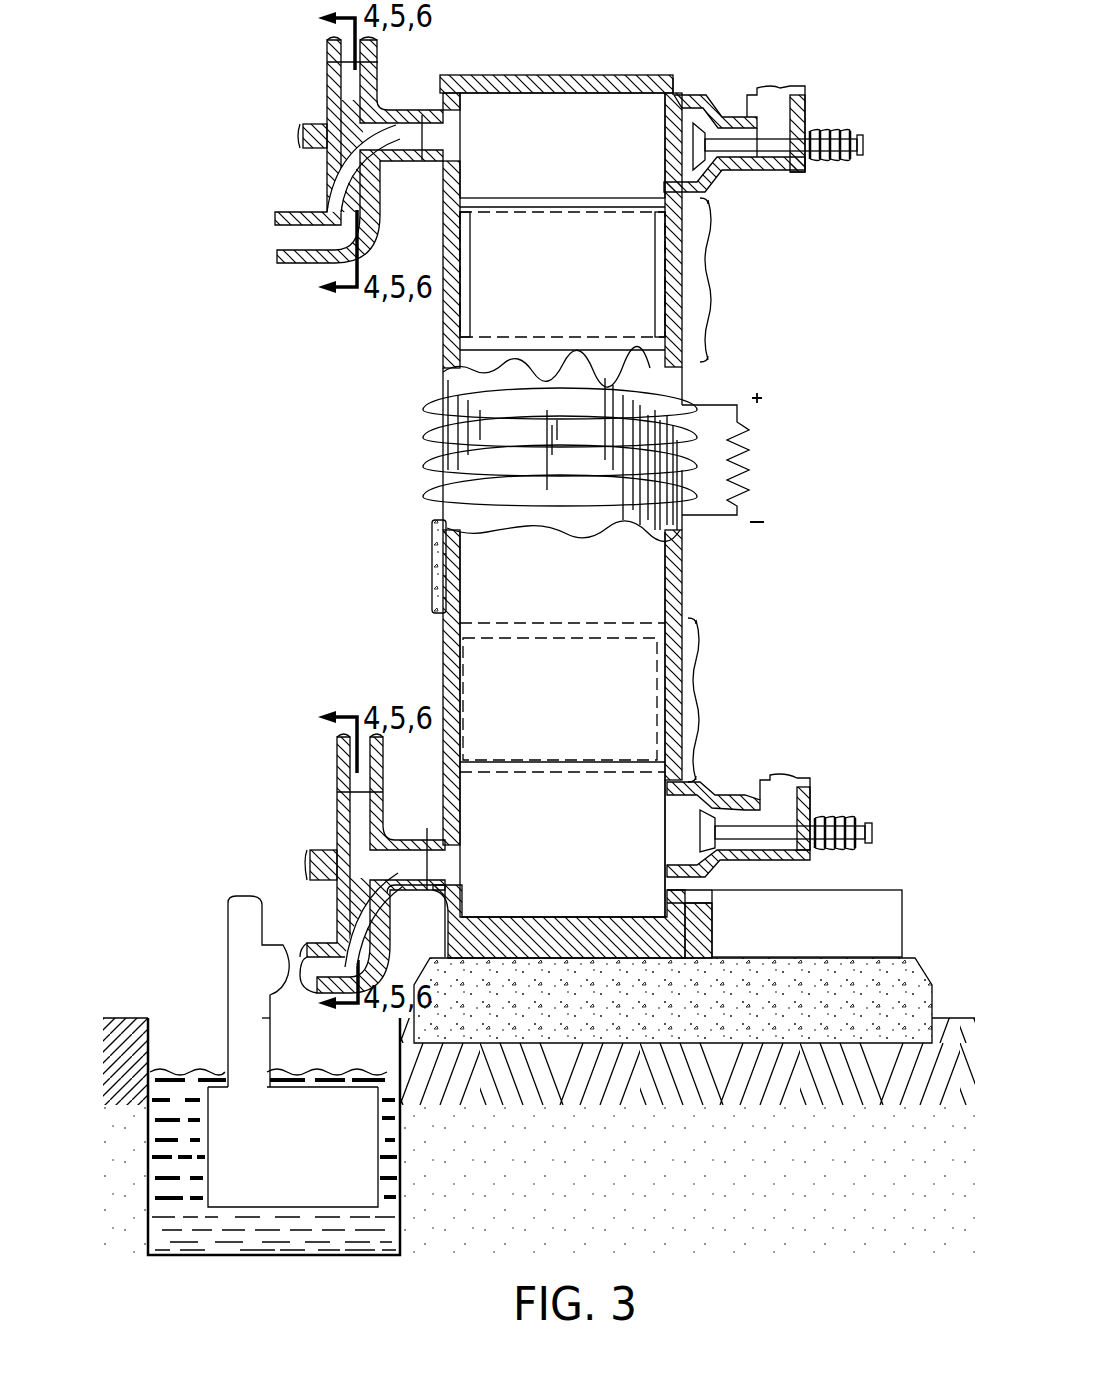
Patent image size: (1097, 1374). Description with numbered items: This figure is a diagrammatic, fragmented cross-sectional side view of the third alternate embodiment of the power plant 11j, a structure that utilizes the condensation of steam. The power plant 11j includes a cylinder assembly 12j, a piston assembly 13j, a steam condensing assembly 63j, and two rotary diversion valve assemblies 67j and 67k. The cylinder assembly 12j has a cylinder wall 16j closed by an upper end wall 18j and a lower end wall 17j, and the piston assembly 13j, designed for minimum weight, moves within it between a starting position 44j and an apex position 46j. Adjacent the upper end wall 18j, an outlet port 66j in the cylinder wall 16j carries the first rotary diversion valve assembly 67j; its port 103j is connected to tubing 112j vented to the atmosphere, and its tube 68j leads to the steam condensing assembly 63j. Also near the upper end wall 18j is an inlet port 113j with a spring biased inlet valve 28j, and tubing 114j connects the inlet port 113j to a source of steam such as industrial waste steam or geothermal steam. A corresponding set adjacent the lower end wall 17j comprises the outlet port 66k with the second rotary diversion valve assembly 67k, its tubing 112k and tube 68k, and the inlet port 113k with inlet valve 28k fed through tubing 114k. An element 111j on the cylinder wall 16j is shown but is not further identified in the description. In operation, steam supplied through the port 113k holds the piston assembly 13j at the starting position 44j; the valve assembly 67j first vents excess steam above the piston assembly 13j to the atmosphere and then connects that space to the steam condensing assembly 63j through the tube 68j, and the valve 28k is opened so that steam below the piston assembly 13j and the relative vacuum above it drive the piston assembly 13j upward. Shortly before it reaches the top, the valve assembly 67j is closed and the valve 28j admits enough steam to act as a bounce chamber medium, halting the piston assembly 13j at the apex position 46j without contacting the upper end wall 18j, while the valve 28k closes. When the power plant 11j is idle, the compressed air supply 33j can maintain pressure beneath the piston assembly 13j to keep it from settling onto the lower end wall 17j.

The power plant 11j is at (740, 565).
The cylinder assembly 12j is at (700, 660).
The piston assembly 13j is at (618, 284).
The cylinder wall 16j is at (446, 322).
The lower end wall 17j is at (468, 945).
The upper end wall 18j is at (606, 77).
The spring biased inlet valve 28j is at (741, 148).
The inlet valve 28k is at (800, 855).
The compressed air supply 33j is at (903, 912).
The starting position 44j is at (604, 700).
The apex position 46j is at (728, 280).
The steam condensing assembly 63j is at (407, 1204).
The outlet port 66j is at (452, 132).
The outlet port 66k is at (434, 840).
The rotary diversion valve assembly 67j is at (283, 126).
The rotary diversion valve assembly 67k is at (313, 846).
The tube 68j is at (298, 260).
The tube 68k is at (322, 943).
The port 103j is at (366, 78).
The bearing pad 111j is at (434, 560).
The tubing 112j is at (327, 50).
The tubing 112k is at (338, 772).
The inlet port 113j is at (677, 120).
The inlet port 113k is at (682, 805).
The tubing 114j is at (781, 98).
The tubing 114k is at (785, 790).